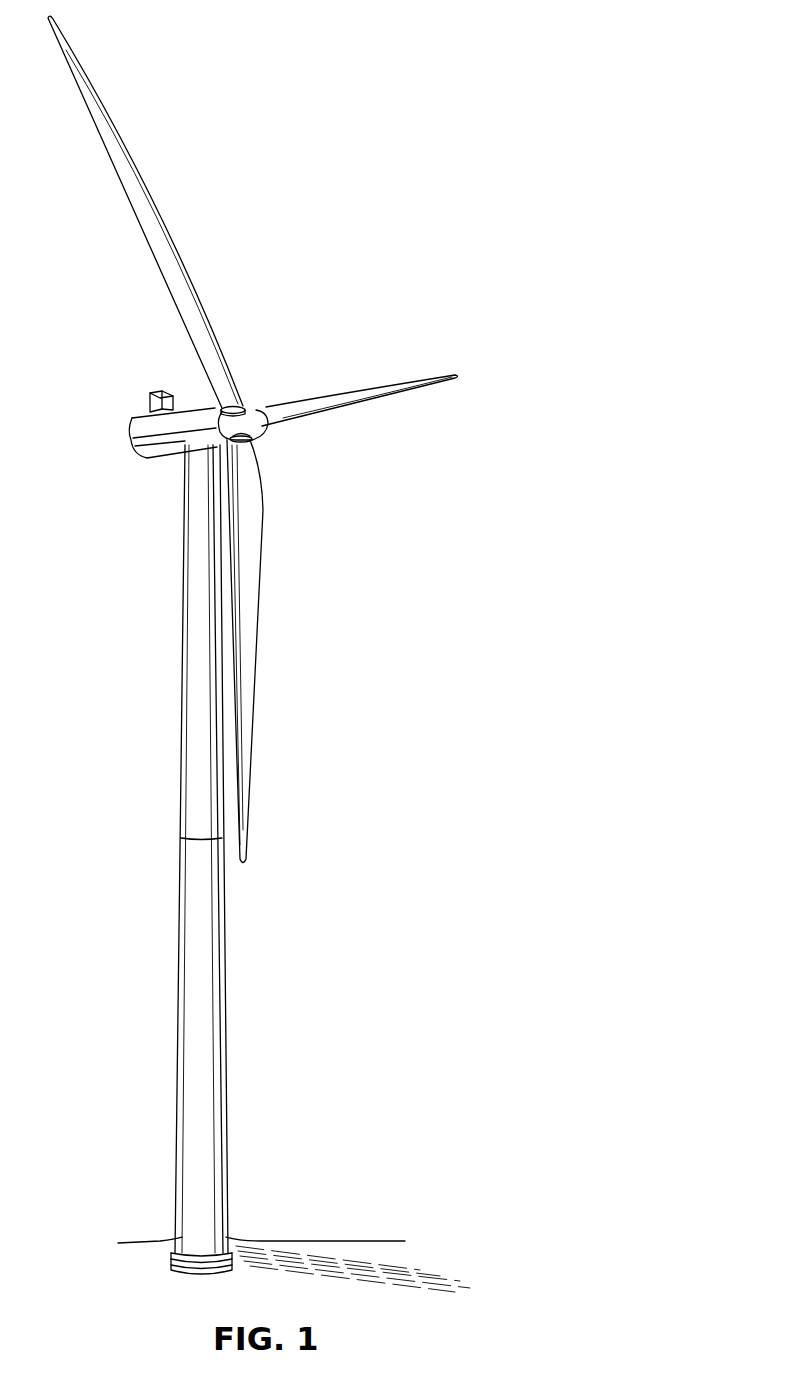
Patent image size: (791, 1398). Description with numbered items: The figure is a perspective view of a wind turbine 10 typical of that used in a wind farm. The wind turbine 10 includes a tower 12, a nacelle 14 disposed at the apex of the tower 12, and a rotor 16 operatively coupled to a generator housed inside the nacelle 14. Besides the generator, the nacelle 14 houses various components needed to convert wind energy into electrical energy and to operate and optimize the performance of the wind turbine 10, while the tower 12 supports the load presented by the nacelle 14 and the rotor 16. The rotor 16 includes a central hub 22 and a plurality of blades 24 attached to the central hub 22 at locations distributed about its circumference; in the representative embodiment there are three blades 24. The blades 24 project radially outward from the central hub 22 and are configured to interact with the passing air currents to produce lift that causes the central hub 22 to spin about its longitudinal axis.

The wind turbine 10 is at (383, 266).
The tower 12 is at (183, 707).
The nacelle 14 is at (136, 420).
The rotor 16 is at (264, 437).
The central hub 22 is at (252, 407).
The blades 24 is at (88, 112).